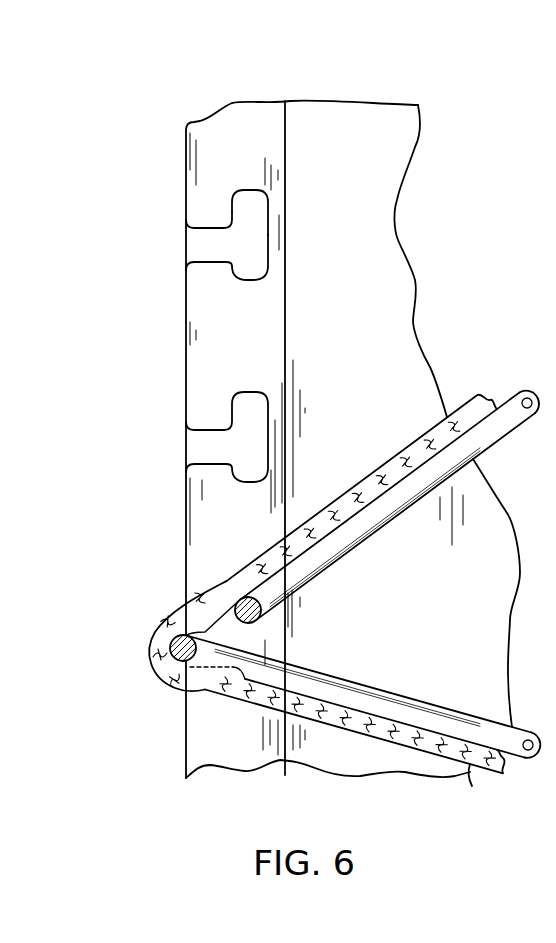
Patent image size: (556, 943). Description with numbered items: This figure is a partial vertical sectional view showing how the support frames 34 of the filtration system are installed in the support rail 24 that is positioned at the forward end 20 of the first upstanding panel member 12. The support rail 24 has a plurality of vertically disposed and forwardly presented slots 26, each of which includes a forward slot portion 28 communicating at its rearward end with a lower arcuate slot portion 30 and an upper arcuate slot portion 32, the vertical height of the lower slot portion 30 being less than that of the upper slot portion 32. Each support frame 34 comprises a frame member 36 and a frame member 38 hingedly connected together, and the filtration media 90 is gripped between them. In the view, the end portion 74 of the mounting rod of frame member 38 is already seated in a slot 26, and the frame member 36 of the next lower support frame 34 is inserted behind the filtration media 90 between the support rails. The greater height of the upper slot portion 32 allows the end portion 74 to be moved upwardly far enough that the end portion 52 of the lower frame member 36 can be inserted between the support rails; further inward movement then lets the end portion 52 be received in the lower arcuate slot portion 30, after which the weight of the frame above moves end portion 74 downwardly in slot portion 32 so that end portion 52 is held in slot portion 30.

The first upstanding panel member 12 is at (404, 243).
The forward end 20 is at (548, 257).
The support rail 24 is at (250, 98).
The slots 26 is at (205, 239).
The forward slot portion 28 is at (208, 250).
The lower arcuate slot portion 30 is at (253, 265).
The upper arcuate slot portion 32 is at (253, 203).
The filtration media support frame 34 is at (511, 448).
The frame member 36 is at (430, 696).
The frame member 38 is at (404, 522).
The end portion 52 is at (158, 660).
The end portion 74 is at (223, 593).
The filtration media 90 is at (378, 738).